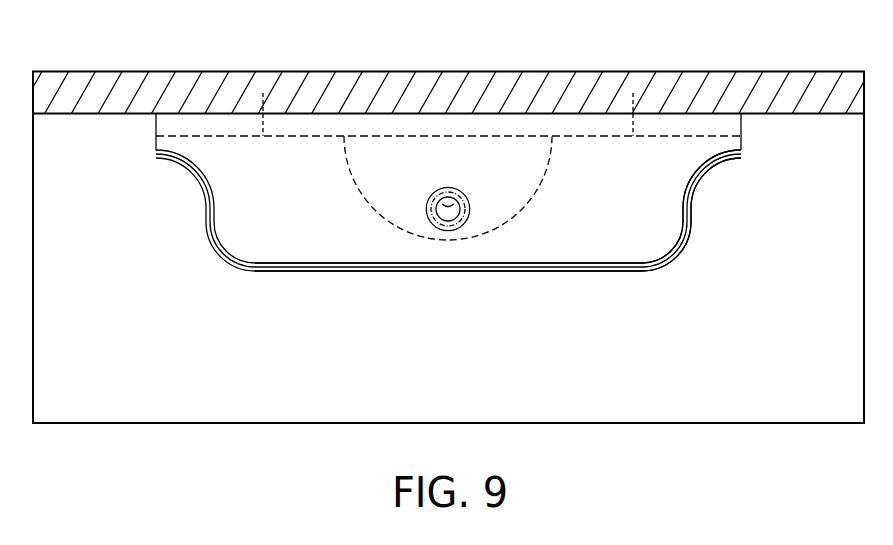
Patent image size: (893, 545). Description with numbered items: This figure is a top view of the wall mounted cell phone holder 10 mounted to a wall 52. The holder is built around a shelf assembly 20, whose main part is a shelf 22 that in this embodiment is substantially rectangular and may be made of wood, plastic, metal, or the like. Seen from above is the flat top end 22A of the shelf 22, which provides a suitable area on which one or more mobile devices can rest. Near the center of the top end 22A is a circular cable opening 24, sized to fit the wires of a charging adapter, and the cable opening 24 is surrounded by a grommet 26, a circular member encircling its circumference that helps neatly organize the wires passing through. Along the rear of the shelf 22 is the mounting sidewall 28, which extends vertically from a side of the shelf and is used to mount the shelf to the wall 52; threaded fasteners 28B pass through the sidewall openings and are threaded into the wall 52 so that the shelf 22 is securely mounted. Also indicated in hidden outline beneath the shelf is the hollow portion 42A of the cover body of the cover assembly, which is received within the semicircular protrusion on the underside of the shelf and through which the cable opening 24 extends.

The wall mounted cell phone holder 10 is at (145, 187).
The shelf assembly 20 is at (254, 213).
The shelf 22 is at (667, 225).
The top end 22A is at (297, 220).
The cable opening 24 is at (448, 222).
The grommet 26 is at (467, 220).
The mounting sidewall 28 is at (692, 125).
The threaded fasteners 28B is at (642, 103).
The hollow portion 42A is at (415, 155).
The wall 52 is at (496, 97).